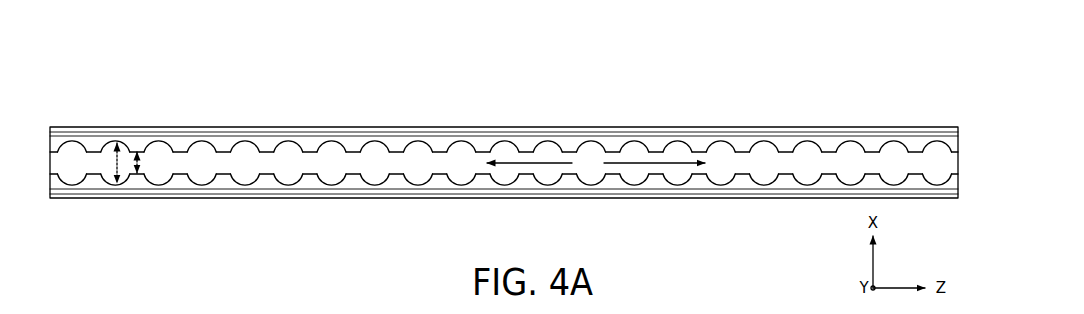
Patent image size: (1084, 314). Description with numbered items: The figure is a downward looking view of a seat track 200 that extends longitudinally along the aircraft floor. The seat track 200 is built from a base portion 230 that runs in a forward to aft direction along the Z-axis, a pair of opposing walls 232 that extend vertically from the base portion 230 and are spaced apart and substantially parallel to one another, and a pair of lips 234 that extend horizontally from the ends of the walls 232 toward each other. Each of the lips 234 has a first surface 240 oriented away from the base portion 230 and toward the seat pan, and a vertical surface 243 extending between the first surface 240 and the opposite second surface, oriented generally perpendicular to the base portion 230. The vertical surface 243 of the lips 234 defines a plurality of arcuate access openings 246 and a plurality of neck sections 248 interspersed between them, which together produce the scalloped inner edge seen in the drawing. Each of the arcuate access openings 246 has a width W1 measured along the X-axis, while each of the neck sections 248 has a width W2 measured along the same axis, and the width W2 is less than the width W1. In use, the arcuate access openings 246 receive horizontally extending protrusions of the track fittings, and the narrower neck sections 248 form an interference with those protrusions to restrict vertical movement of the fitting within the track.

The seat track 200 is at (501, 136).
The base portion 230 is at (504, 163).
The opposing walls 232 is at (477, 130).
The lips 234 is at (504, 160).
The first surface 240 is at (596, 200).
The vertical surface 243 is at (357, 152).
The arcuate access openings 246 is at (250, 145).
The neck sections 248 is at (217, 203).
The width of arcuate access openings W1 is at (117, 143).
The width of neck sections W2 is at (137, 152).